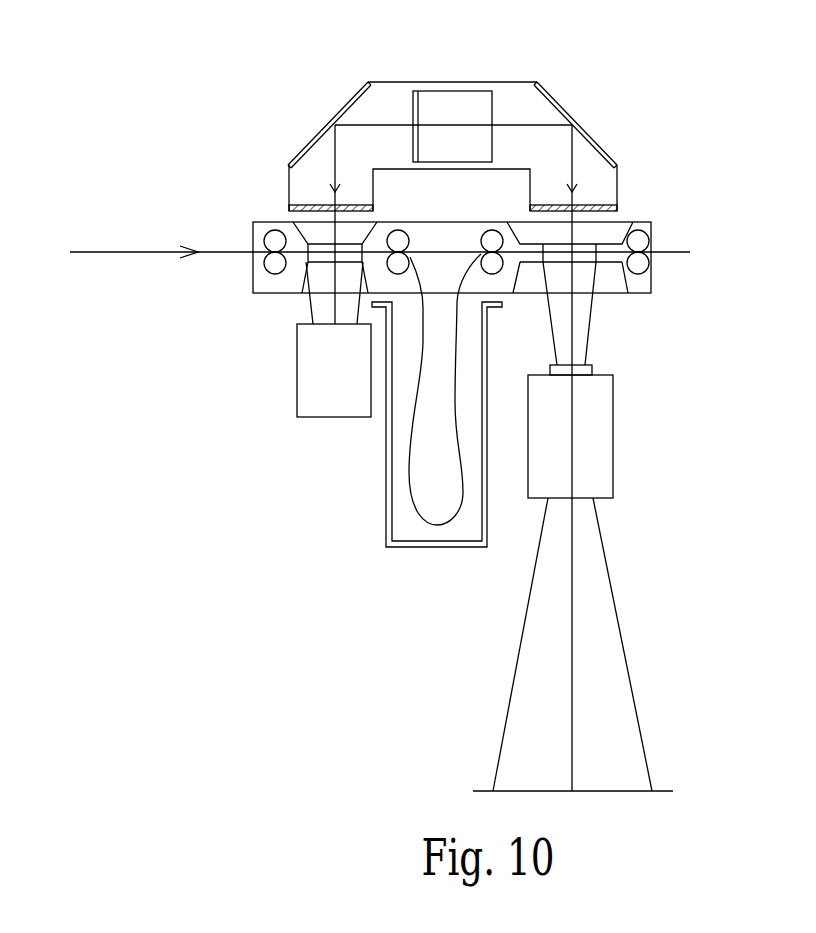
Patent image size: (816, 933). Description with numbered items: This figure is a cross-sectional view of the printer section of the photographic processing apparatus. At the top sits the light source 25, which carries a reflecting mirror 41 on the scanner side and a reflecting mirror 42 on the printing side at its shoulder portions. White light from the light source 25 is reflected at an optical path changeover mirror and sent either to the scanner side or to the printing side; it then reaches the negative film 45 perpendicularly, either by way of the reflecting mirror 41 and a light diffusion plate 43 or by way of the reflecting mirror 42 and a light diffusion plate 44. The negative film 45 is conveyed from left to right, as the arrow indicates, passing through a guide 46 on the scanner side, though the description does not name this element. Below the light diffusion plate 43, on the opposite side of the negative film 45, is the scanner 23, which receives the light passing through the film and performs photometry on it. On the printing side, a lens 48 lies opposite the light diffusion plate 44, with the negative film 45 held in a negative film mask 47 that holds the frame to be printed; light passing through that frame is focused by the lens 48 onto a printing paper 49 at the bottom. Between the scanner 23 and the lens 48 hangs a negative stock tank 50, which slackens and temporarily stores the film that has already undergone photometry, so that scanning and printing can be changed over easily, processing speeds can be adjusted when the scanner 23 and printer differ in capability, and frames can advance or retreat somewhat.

The light source 25 is at (513, 69).
The reflecting mirror 41 is at (327, 127).
The reflecting mirror 42 is at (580, 128).
The light diffusion plate 43 is at (310, 198).
The light diffusion plate 44 is at (600, 202).
The negative film 45 is at (120, 248).
The left guide 46 is at (317, 255).
The negative film mask 47 is at (608, 252).
The scanner 23 is at (310, 360).
The lens 48 is at (590, 475).
The printing paper 49 is at (627, 789).
The negative stock tank 50 is at (425, 530).